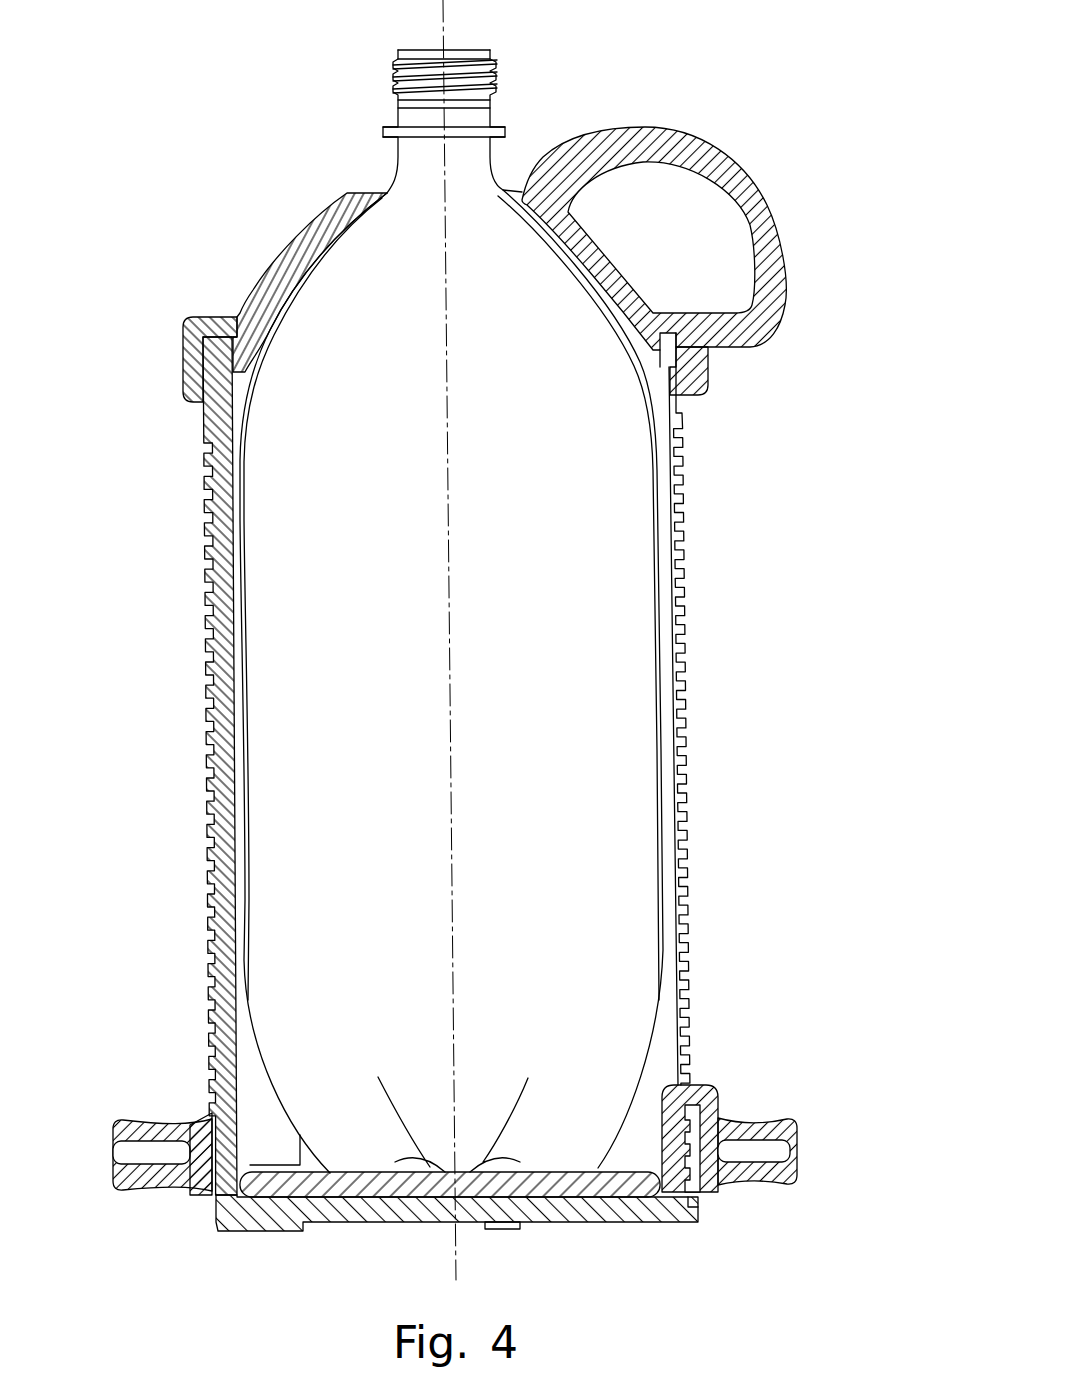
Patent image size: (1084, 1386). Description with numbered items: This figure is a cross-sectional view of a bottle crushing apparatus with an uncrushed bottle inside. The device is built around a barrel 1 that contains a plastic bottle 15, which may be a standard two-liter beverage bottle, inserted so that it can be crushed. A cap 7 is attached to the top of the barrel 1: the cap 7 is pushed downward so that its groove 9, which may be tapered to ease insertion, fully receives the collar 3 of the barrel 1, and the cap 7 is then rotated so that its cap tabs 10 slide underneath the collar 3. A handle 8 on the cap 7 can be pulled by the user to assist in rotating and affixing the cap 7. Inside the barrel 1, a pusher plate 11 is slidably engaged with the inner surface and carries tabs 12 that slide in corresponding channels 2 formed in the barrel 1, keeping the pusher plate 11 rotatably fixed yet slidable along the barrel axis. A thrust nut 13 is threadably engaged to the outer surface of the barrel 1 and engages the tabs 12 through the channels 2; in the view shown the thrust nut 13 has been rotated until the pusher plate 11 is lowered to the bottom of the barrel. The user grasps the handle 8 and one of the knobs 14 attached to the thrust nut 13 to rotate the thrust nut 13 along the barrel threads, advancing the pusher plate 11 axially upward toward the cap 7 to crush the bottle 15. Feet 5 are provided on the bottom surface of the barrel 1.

The barrel 1 is at (740, 551).
The channels 2 is at (672, 766).
The collar 3 is at (213, 335).
The feet 5 is at (262, 1230).
The cap 7 is at (250, 247).
The handle 8 is at (770, 213).
The groove 9 is at (203, 405).
The cap tabs 10 is at (690, 392).
The pusher plate 11 is at (363, 1173).
The tabs 12 is at (700, 1088).
The thrust nut 13 is at (710, 1192).
The knobs 14 is at (797, 1141).
The plastic bottle 15 is at (470, 50).